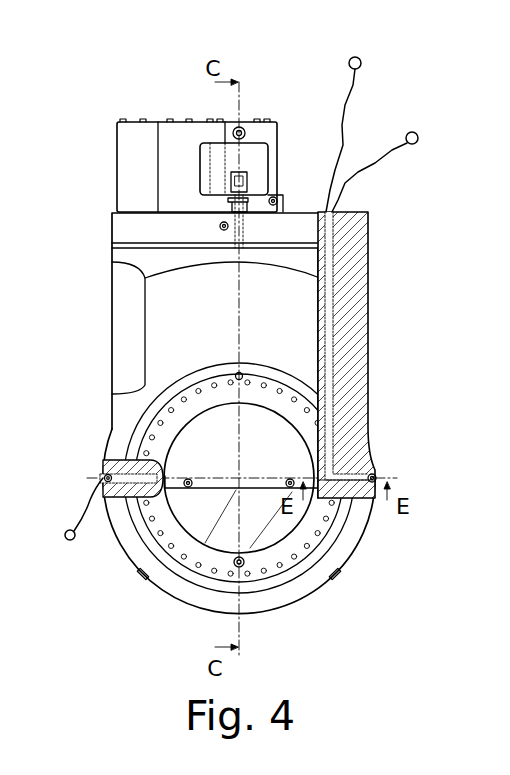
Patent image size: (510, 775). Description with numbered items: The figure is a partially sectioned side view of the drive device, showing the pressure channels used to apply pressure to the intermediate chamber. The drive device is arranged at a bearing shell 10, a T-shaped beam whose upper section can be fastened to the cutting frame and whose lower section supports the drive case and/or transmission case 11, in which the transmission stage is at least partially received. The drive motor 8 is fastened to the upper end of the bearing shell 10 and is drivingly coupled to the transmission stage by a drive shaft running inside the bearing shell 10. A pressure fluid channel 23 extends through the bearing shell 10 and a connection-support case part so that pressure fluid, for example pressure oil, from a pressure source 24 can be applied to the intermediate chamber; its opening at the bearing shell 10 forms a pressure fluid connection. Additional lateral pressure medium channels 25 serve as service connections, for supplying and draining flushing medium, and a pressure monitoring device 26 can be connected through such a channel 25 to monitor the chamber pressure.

The drive motor 8 is at (275, 161).
The bearing shell 10 is at (350, 287).
The drive case and/or transmission case 11 is at (138, 419).
The pressure fluid channel 23 is at (330, 340).
The pressure source 24 is at (412, 131).
The lateral pressure medium channel 25 is at (110, 462).
The pressure monitoring device 26 is at (362, 61).